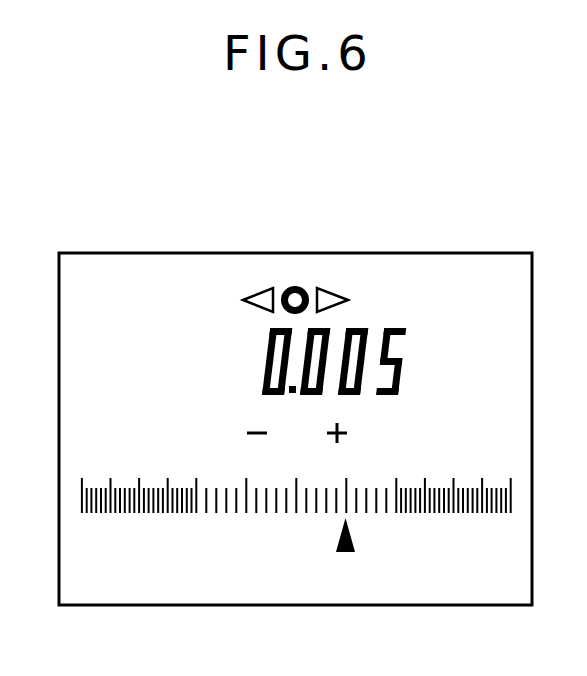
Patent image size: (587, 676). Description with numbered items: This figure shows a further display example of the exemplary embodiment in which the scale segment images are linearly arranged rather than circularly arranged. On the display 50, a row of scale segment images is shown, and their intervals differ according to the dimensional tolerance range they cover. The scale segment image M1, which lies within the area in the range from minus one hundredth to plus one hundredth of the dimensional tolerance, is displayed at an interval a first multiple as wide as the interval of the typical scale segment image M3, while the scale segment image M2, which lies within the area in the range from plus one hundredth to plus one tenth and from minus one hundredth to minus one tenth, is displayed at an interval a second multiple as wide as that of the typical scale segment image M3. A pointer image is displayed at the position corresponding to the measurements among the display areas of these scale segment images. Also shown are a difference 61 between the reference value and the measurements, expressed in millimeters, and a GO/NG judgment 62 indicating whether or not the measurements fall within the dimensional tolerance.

The display 50 is at (441, 197).
The difference 61 is at (428, 327).
The GO/NG judgment 62 is at (221, 309).
The scale segment image M1 is at (266, 516).
The scale segment image M2 is at (168, 516).
The typical scale segment image M3 is at (100, 516).